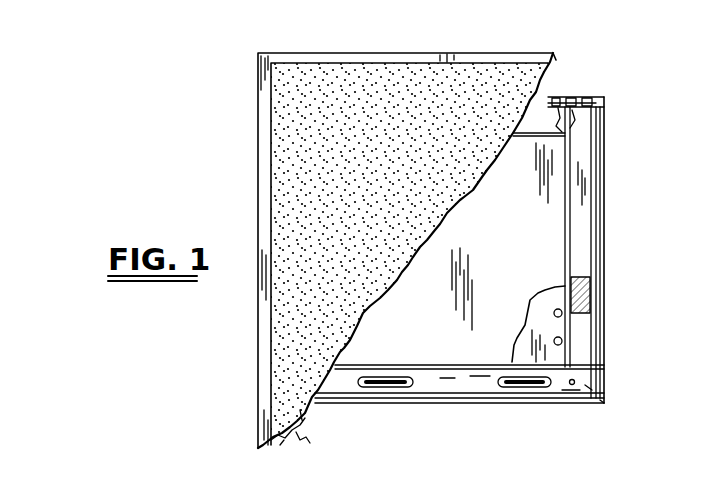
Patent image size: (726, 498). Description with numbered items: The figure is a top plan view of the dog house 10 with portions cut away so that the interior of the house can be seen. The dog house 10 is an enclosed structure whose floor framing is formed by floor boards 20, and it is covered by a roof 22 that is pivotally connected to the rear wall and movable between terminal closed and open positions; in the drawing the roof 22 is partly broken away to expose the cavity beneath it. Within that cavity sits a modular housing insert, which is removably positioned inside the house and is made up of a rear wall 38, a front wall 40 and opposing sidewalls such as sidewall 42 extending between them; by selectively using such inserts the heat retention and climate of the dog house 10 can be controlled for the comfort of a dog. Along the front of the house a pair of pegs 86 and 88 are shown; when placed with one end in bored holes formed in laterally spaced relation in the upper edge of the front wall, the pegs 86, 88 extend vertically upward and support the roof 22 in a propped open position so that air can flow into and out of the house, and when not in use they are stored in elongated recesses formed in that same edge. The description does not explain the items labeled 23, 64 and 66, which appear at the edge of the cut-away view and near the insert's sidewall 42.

The dog house 10 is at (642, 125).
The floor boards 20 is at (552, 357).
The roof 22 is at (277, 113).
The sill 23 is at (690, 494).
The rear wall 38 is at (555, 100).
The front wall 40 is at (422, 372).
The sidewall 42 is at (568, 190).
The fastener 64 is at (562, 315).
The fastener 66 is at (561, 343).
The peg 86 is at (515, 388).
The peg 88 is at (385, 388).